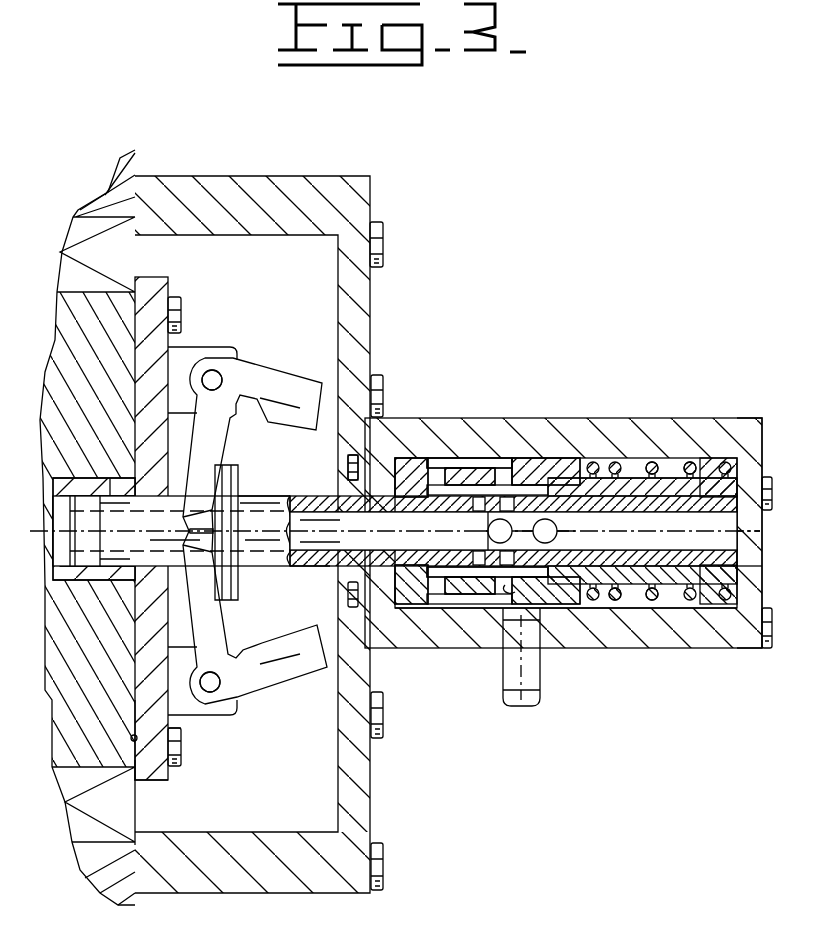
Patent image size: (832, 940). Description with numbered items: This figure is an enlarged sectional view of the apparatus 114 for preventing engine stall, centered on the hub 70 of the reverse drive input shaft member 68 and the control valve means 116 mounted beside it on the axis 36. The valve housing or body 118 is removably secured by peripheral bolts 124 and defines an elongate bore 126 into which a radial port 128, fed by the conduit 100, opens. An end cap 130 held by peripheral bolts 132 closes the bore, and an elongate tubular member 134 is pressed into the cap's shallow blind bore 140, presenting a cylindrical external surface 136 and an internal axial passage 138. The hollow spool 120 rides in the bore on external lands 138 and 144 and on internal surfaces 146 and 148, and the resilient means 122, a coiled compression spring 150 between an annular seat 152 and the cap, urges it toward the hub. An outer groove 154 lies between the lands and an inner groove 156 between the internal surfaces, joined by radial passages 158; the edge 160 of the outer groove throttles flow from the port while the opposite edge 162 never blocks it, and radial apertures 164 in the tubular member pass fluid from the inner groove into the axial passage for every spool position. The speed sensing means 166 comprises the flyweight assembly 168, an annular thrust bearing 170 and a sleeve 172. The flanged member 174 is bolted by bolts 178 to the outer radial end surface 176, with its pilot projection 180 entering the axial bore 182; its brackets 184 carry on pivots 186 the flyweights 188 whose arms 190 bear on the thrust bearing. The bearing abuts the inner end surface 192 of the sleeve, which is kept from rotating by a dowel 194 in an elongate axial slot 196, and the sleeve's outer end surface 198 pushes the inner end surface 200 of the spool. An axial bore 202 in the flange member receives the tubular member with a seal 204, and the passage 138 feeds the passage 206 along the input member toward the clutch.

The hub end portion 70 is at (100, 718).
The reverse drive input shaft member 68 is at (103, 771).
The apparatus for preventing engine stall 114 is at (383, 792).
The peripheral bolts 124 is at (384, 236).
The flyweight assembly 168 is at (176, 274).
The flanged member 174 is at (150, 780).
The outer radial end surface 176 is at (130, 739).
The brackets 184 is at (178, 358).
The bolts 178 is at (182, 752).
The axial bore 202 is at (120, 582).
The seal 204 is at (128, 460).
The passage 206 is at (128, 478).
The axial bore 182 is at (120, 600).
The pilot projection 180 is at (122, 618).
The annular thrust bearing 170 is at (238, 596).
The sleeve 172 is at (305, 567).
The inner end surface 192 is at (220, 466).
The speed sensing means 166 is at (274, 365).
The pivot 186 is at (214, 378).
The flyweight 188 is at (312, 412).
The arm 190 is at (220, 432).
The elongate axial slot 196 is at (325, 493).
The control valve means 116 is at (598, 410).
The valve housing or body 118 is at (592, 632).
The end cap 130 is at (748, 437).
The peripheral bolts 132 is at (768, 478).
The shallow blind bore 140 is at (766, 612).
The elongate tubular member 134 is at (742, 527).
The axis 36 is at (750, 560).
The cylindrical external surface 136 is at (590, 531).
The internal axial passage 138 is at (367, 502).
The radial apertures 164 is at (492, 512).
The external cylindrical land 144 is at (598, 466).
The resilient means 122 is at (694, 452).
The coiled compression spring 150 is at (664, 462).
The valve member or hollow spool 120 is at (530, 462).
The radial passages 158 is at (486, 460).
The elongate bore 126 is at (465, 468).
The opposite edge 162 is at (466, 462).
The inner end surface 200 is at (415, 485).
The dowel 194 is at (360, 436).
The outer end surface 198 is at (404, 602).
The internal cylindrical surface 146 is at (448, 595).
The radially inwardly opening circumferential groove 156 is at (472, 580).
The radially outwardly opening circumferential groove 154 is at (520, 590).
The radial port 128 is at (548, 596).
The annular seat 152 is at (605, 600).
The internal cylindrical surface 148 is at (652, 600).
The edge 160 is at (503, 650).
The conduit 100 is at (532, 686).